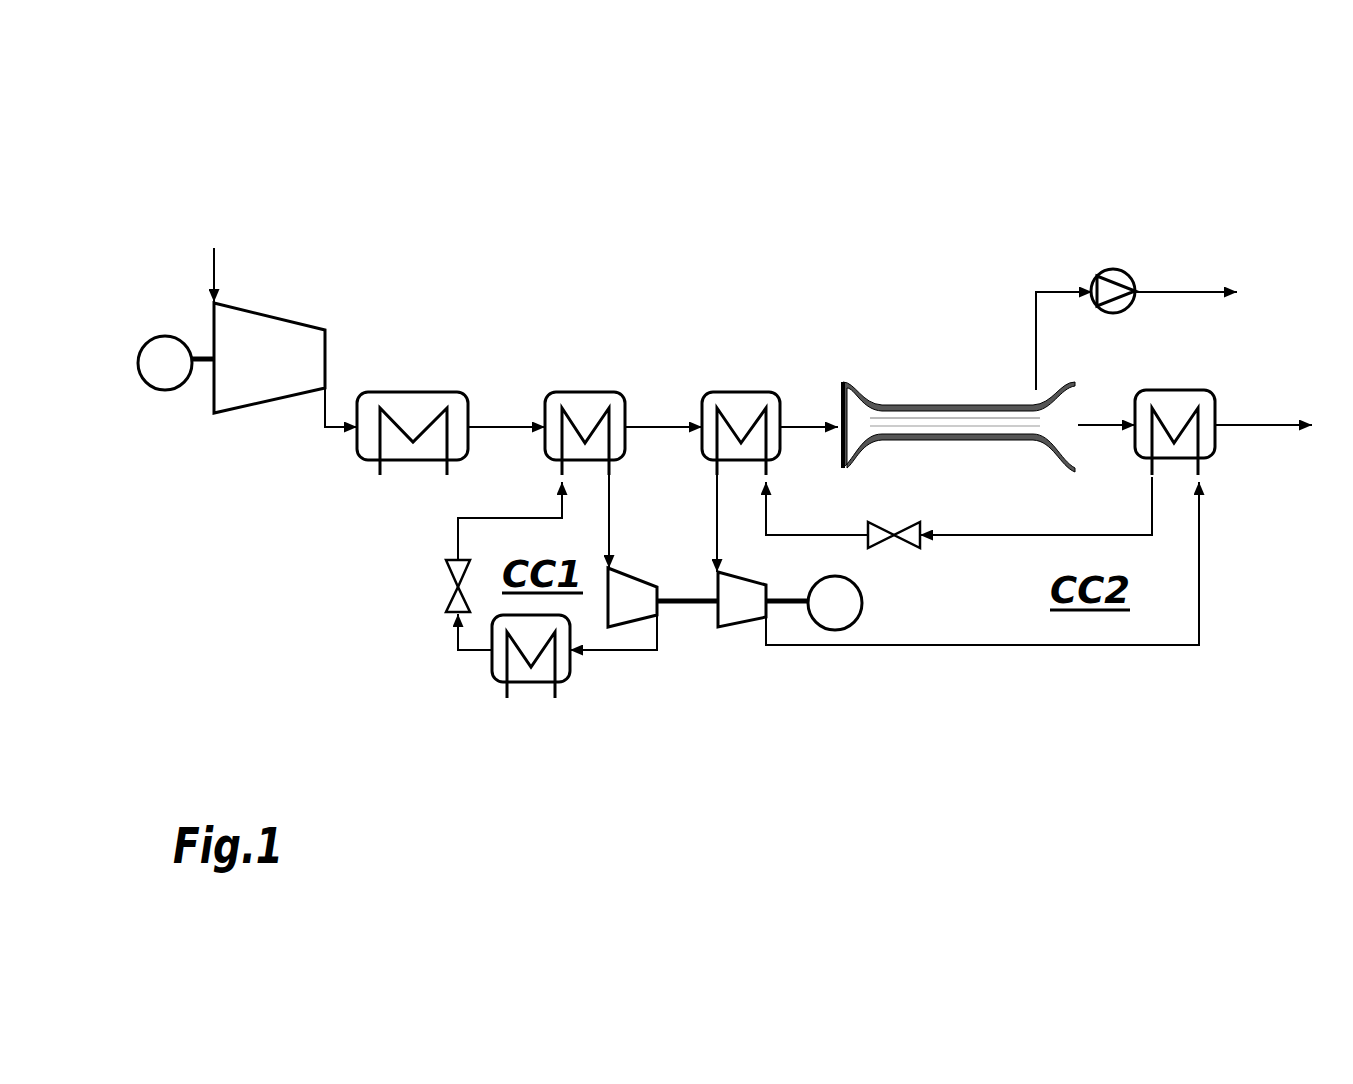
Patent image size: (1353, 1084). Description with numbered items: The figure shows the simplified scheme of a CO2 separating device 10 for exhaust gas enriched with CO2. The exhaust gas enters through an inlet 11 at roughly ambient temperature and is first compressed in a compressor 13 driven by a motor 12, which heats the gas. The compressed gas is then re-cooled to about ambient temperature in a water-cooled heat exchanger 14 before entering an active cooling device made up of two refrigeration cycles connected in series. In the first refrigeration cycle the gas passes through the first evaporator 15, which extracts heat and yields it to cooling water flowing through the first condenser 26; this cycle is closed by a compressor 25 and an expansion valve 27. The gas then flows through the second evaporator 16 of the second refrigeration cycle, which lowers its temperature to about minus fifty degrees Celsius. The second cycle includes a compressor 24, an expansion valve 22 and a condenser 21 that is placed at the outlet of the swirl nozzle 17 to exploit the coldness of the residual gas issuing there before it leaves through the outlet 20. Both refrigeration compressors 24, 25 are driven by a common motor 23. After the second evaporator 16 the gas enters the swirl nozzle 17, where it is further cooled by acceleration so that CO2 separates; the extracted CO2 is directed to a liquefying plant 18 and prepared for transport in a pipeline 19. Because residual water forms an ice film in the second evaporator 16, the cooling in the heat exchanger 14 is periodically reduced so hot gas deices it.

The CO2 separating device 10 is at (668, 202).
The inlet 11 is at (212, 260).
The motor 12 is at (167, 372).
The compressor 13 is at (283, 388).
The heat exchanger 14 is at (403, 400).
The evaporator 15 is at (582, 398).
The evaporator 16 is at (737, 400).
The swirl nozzle 17 is at (940, 410).
The liquefying plant 18 is at (1115, 275).
The pipeline 19 is at (1200, 288).
The outlet 20 is at (1260, 418).
The condenser 21 is at (1212, 453).
The expansion valve 22 is at (913, 543).
The motor 23 is at (838, 617).
The compressor 24 is at (733, 608).
The compressor 25 is at (627, 612).
The condenser 26 is at (500, 677).
The expansion valve 27 is at (452, 602).